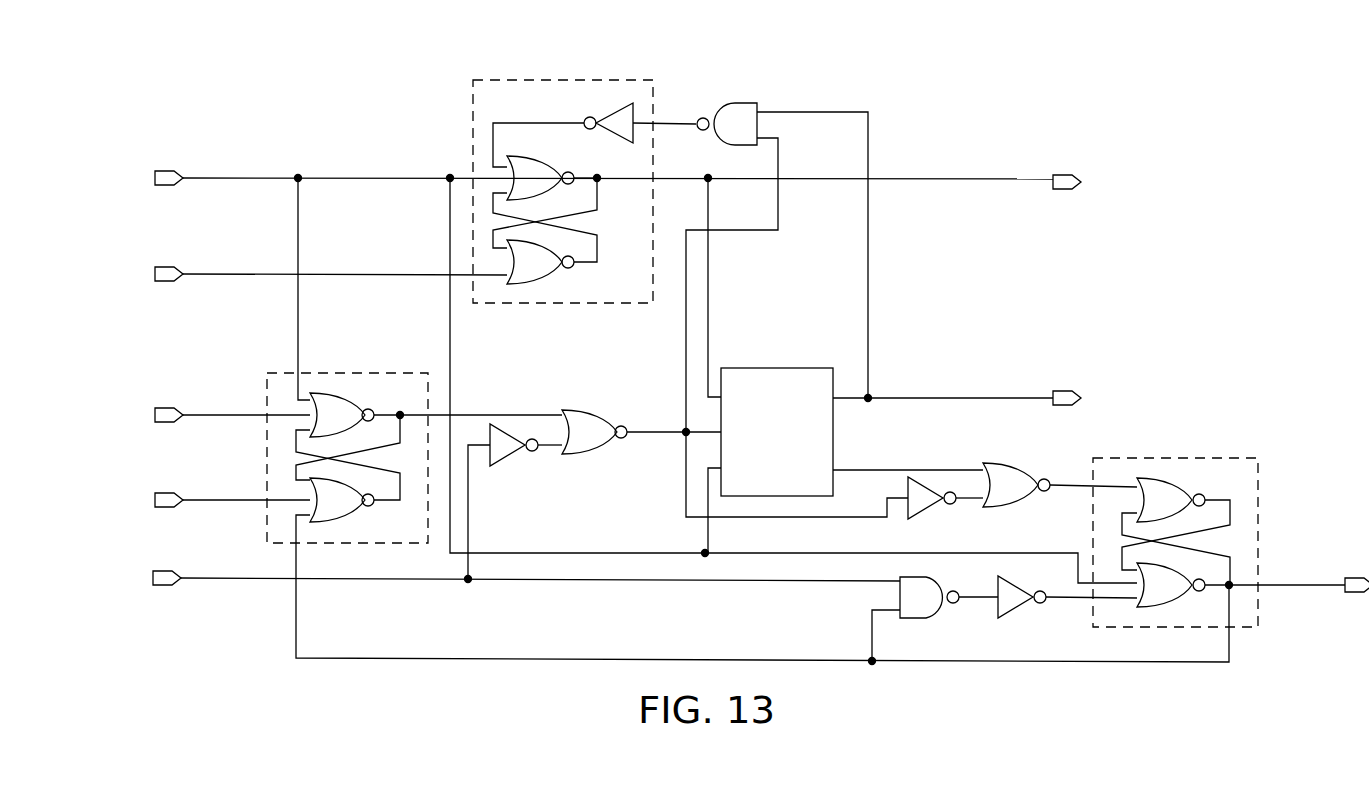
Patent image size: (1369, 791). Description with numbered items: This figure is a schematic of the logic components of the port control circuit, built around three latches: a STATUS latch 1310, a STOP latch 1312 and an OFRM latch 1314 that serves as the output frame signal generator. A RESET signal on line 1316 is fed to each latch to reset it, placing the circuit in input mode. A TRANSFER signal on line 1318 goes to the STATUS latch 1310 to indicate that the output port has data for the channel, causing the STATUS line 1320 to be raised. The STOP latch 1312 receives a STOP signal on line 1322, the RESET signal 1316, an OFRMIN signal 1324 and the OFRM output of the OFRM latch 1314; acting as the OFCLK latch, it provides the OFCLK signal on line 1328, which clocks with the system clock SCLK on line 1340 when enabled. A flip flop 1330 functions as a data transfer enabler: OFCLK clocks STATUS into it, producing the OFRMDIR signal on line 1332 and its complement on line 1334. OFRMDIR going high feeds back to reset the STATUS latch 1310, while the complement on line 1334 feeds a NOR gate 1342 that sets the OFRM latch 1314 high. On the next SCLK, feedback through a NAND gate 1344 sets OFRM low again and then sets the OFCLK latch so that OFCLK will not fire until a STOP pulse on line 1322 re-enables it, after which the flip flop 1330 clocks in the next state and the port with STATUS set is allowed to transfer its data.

The STATUS latch 1310 is at (572, 77).
The STOP latch 1312 is at (375, 370).
The OFRM latch 1314 is at (1210, 452).
The RESET signal line 1316 is at (237, 176).
The TRANSFER signal line 1318 is at (226, 272).
The STATUS line 1320 is at (924, 178).
The STOP signal line 1322 is at (216, 412).
The OFRMIN signal 1324 is at (214, 497).
The OFCLK signal line 1328 is at (655, 437).
The flip flop 1330 is at (783, 366).
The OFRMDIR signal line 1332 is at (901, 395).
The OFRMDIR complement line 1334 is at (974, 466).
The SCLK line 1340 is at (214, 576).
The NOR gate 1342 is at (1029, 466).
The NAND gate 1344 is at (933, 618).